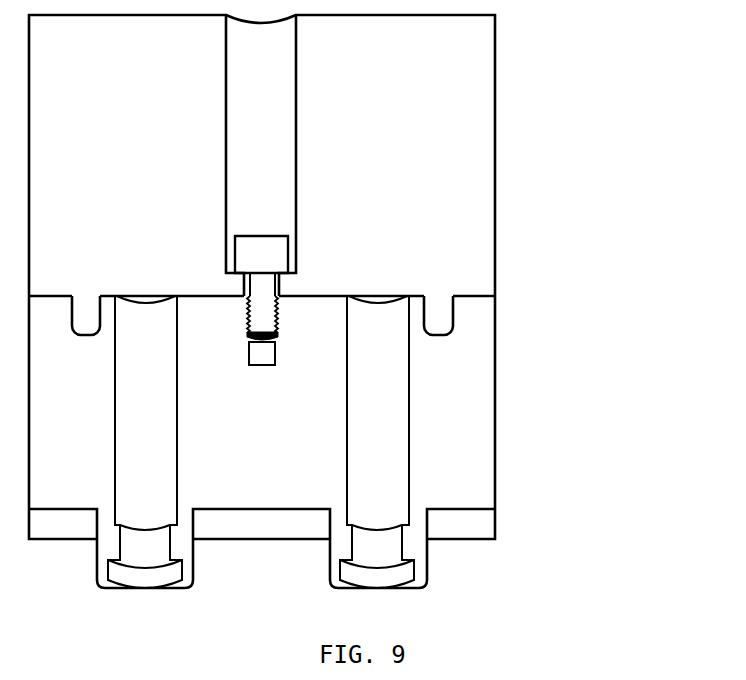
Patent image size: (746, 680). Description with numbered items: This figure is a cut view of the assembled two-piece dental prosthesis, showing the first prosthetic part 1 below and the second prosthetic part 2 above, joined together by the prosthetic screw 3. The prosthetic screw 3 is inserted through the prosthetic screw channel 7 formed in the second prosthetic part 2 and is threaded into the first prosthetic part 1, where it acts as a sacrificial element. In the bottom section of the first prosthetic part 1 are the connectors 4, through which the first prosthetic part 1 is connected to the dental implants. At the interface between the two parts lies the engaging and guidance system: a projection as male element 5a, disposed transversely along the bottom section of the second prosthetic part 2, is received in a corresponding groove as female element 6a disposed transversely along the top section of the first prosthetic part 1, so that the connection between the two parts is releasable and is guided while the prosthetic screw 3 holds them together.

The first prosthetic part 1 is at (417, 454).
The second prosthetic part 2 is at (397, 101).
The prosthetic screw 3 is at (258, 252).
The connector 4 is at (417, 563).
The projection as male element 5a is at (440, 314).
The groove as female element 6a is at (86, 315).
The prosthetic screw channel 7 is at (258, 190).